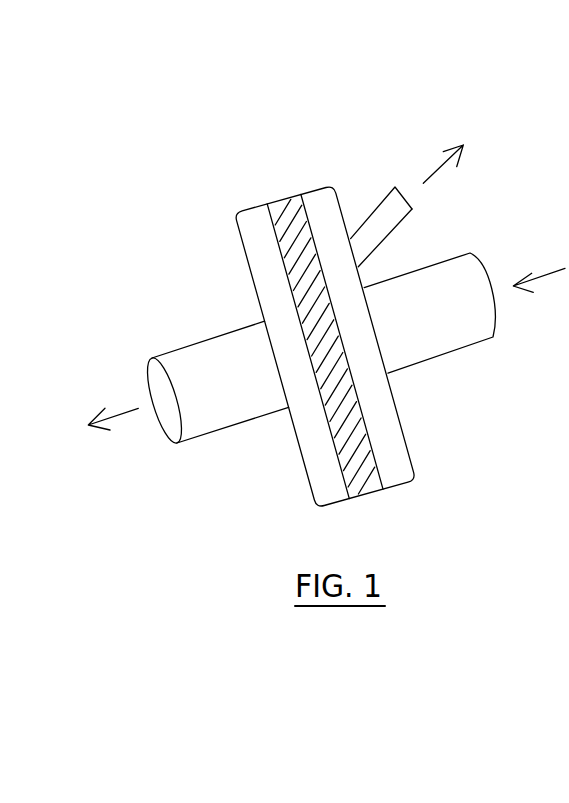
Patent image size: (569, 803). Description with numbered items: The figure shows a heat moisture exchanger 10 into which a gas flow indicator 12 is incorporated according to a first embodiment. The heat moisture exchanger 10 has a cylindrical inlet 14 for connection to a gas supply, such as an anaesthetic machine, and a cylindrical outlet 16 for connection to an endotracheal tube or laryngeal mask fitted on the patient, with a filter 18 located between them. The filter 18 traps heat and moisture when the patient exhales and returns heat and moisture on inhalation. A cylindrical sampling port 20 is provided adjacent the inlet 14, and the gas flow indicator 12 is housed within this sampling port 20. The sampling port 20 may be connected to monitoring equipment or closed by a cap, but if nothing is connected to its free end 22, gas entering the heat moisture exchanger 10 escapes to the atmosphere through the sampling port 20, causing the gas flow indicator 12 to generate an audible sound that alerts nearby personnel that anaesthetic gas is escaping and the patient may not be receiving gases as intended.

The heat moisture exchanger 10 is at (178, 238).
The gas flow indicator 12 is at (358, 194).
The cylindrical inlet 14 is at (435, 333).
The cylindrical outlet 16 is at (227, 400).
The filter 18 is at (367, 488).
The cylindrical sampling port 20 is at (383, 226).
The free end 22 is at (400, 170).